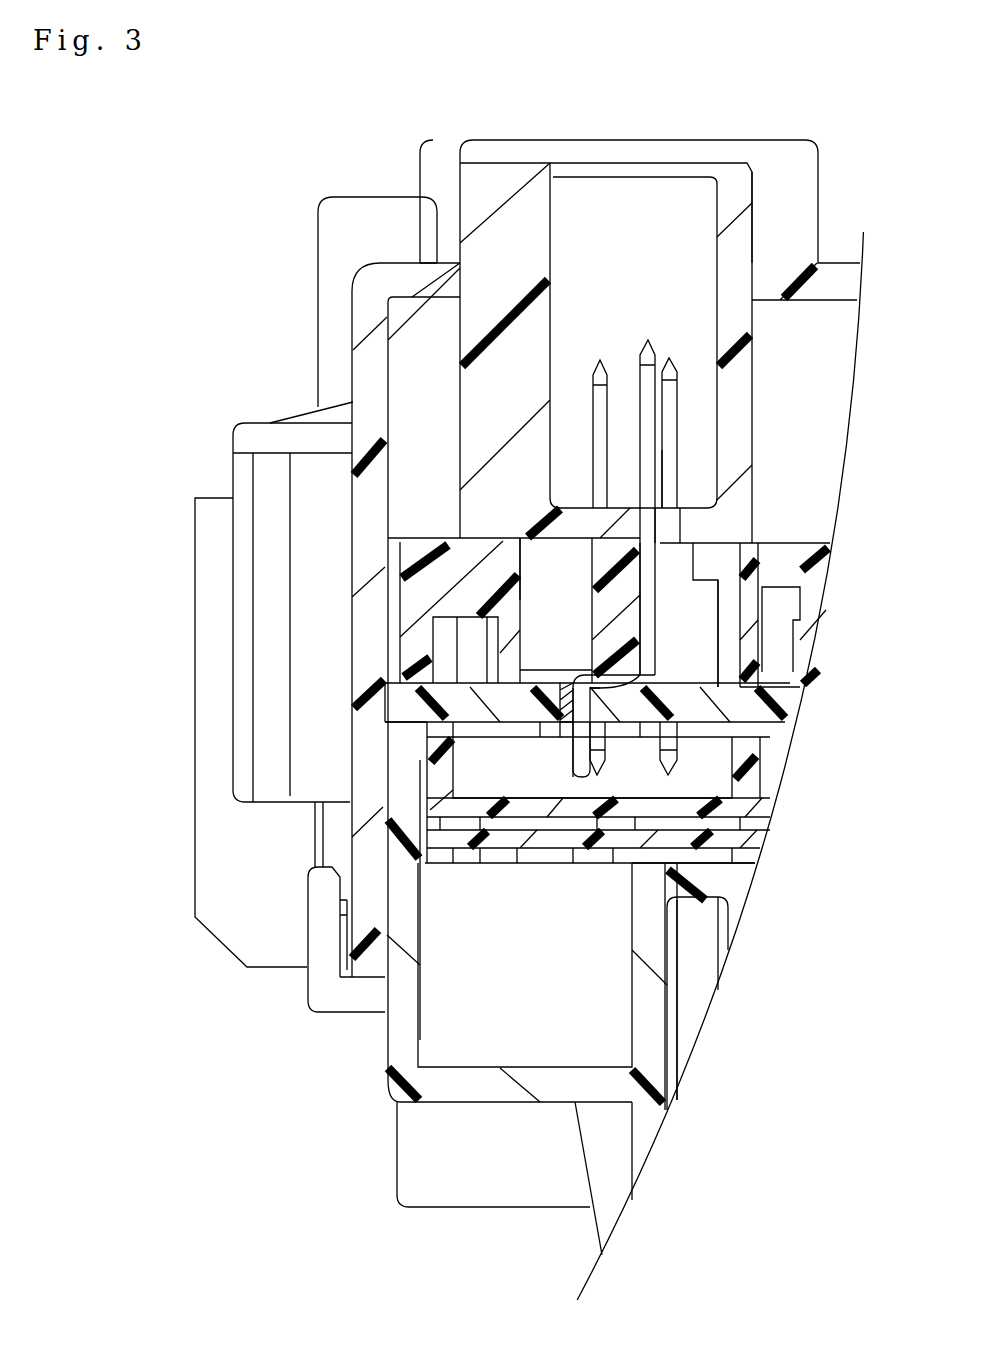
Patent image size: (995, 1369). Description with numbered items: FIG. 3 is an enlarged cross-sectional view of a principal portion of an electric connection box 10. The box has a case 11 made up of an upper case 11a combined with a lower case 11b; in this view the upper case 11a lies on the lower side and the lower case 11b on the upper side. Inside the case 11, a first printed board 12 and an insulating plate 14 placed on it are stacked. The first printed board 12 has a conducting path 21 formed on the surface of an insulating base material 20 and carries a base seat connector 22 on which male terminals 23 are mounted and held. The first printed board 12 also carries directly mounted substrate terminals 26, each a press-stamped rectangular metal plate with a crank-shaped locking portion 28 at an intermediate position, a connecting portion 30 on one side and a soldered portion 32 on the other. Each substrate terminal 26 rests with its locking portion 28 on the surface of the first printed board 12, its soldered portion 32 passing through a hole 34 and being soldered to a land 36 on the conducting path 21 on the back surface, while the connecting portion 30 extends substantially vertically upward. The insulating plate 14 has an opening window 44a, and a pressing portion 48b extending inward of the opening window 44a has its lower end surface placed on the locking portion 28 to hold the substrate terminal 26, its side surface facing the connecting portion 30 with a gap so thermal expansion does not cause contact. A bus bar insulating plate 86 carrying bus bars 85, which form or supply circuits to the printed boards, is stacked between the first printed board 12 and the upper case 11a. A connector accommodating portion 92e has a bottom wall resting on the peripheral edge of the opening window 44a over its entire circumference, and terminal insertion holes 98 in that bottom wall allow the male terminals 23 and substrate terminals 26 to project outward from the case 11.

The electric connection box 10 is at (565, 697).
The case 11 is at (133, 856).
The upper case 11a is at (403, 950).
The lower case 11b is at (363, 846).
The first printed board 12 is at (776, 676).
The insulating plate 14 is at (805, 578).
The insulating base material 20 is at (782, 700).
The conducting path 21 is at (642, 740).
The base seat connector 22 is at (727, 593).
The male terminal 23 is at (600, 362).
The substrate terminal 26 is at (657, 332).
The locking portion 28 is at (608, 683).
The connecting portion 30 is at (655, 426).
The soldered portion 32 is at (572, 752).
The hole 34 is at (565, 682).
The land 36 is at (603, 745).
The opening window 44a is at (522, 597).
The pressing portion 48b is at (605, 617).
The bus bar 85 is at (690, 815).
The bus bar insulating plate 86 is at (468, 800).
The connector accommodating portion 92e is at (750, 163).
The terminal insertion hole 98 is at (660, 524).